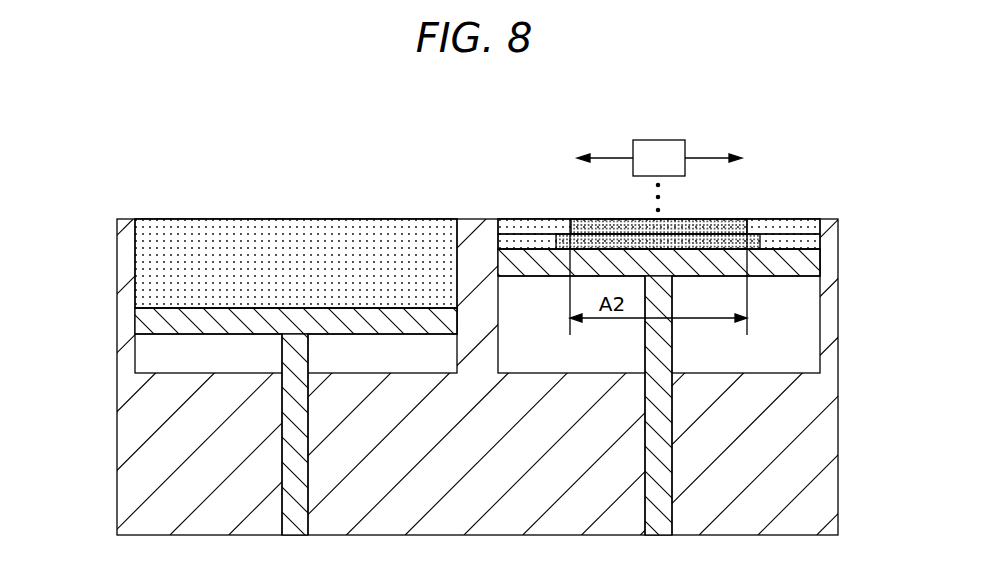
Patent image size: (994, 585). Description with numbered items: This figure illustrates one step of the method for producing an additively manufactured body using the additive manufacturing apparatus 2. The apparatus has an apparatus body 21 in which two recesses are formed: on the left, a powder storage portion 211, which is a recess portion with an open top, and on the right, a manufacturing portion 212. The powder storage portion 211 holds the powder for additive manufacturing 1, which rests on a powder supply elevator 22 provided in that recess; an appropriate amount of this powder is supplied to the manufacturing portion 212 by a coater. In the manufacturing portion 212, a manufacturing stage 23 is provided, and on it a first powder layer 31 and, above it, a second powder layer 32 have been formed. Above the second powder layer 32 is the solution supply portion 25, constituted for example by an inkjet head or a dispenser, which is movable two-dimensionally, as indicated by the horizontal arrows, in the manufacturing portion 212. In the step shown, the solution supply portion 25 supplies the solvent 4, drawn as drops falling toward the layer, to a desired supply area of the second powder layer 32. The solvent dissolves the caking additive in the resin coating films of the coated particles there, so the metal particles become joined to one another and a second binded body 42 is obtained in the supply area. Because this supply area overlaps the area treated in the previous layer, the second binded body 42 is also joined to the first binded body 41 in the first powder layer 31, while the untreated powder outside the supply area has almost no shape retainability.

The powder for additive manufacturing 1 is at (298, 218).
The additive manufacturing apparatus 2 is at (832, 188).
The solvent 4 is at (655, 197).
The apparatus body 21 is at (803, 447).
The powder supply elevator 22 is at (150, 320).
The manufacturing stage 23 is at (803, 265).
The solution supply portion 25 is at (658, 148).
The first powder layer 31 is at (510, 246).
The second powder layer 32 is at (551, 231).
The first binded body 41 is at (757, 240).
The second binded body 42 is at (708, 222).
The powder storage portion 211 is at (137, 248).
The manufacturing portion 212 is at (818, 232).